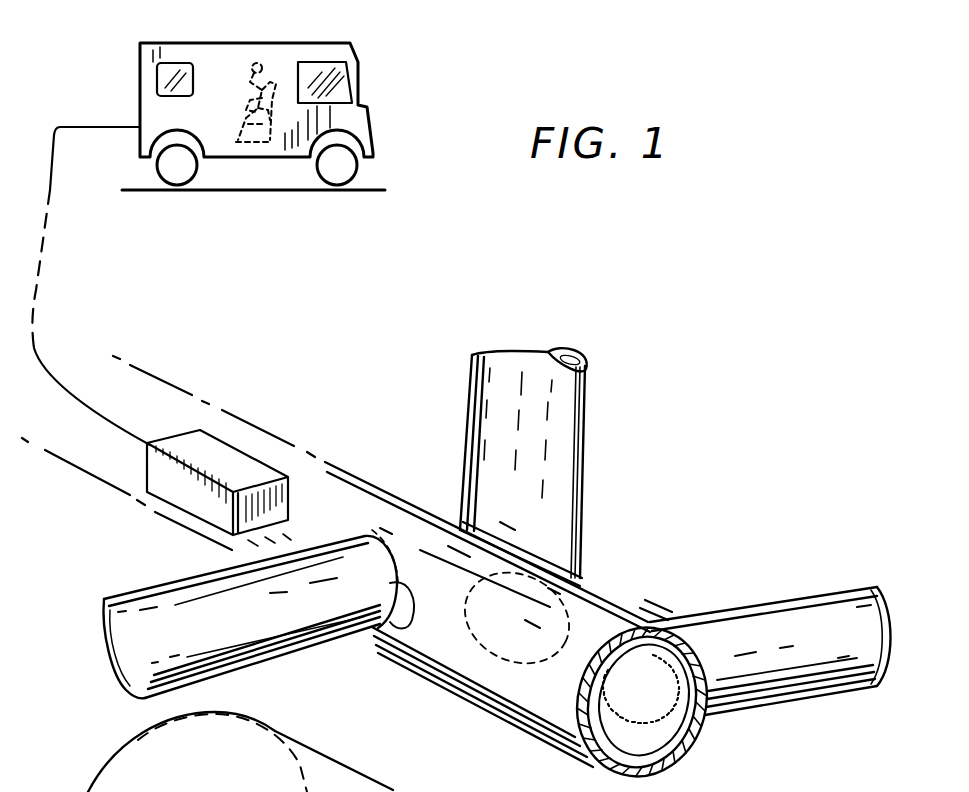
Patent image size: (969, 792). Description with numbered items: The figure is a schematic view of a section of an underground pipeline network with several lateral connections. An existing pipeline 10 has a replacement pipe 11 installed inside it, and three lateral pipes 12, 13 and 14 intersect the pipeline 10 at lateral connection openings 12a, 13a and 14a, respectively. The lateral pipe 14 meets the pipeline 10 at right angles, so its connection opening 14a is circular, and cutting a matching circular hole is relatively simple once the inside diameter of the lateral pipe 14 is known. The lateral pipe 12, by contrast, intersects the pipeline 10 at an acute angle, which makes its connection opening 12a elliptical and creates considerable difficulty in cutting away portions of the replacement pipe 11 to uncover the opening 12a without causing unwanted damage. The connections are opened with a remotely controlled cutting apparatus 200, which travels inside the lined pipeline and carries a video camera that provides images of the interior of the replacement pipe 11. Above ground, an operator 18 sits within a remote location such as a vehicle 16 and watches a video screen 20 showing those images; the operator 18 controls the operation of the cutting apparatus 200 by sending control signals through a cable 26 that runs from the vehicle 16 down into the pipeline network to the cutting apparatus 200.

The existing pipeline 10 is at (386, 488).
The replacement pipe 11 is at (672, 751).
The lateral pipe 12 is at (575, 426).
The lateral connection opening 12a is at (583, 572).
The lateral pipe 13 is at (808, 606).
The lateral connection opening 13a is at (648, 598).
The lateral pipe 14 is at (140, 600).
The lateral connection opening 14a is at (393, 655).
The vehicle 16 is at (317, 62).
The operator 18 is at (258, 62).
The video screen 20 is at (172, 63).
The cable 26 is at (44, 247).
The cutting apparatus 200 is at (180, 433).